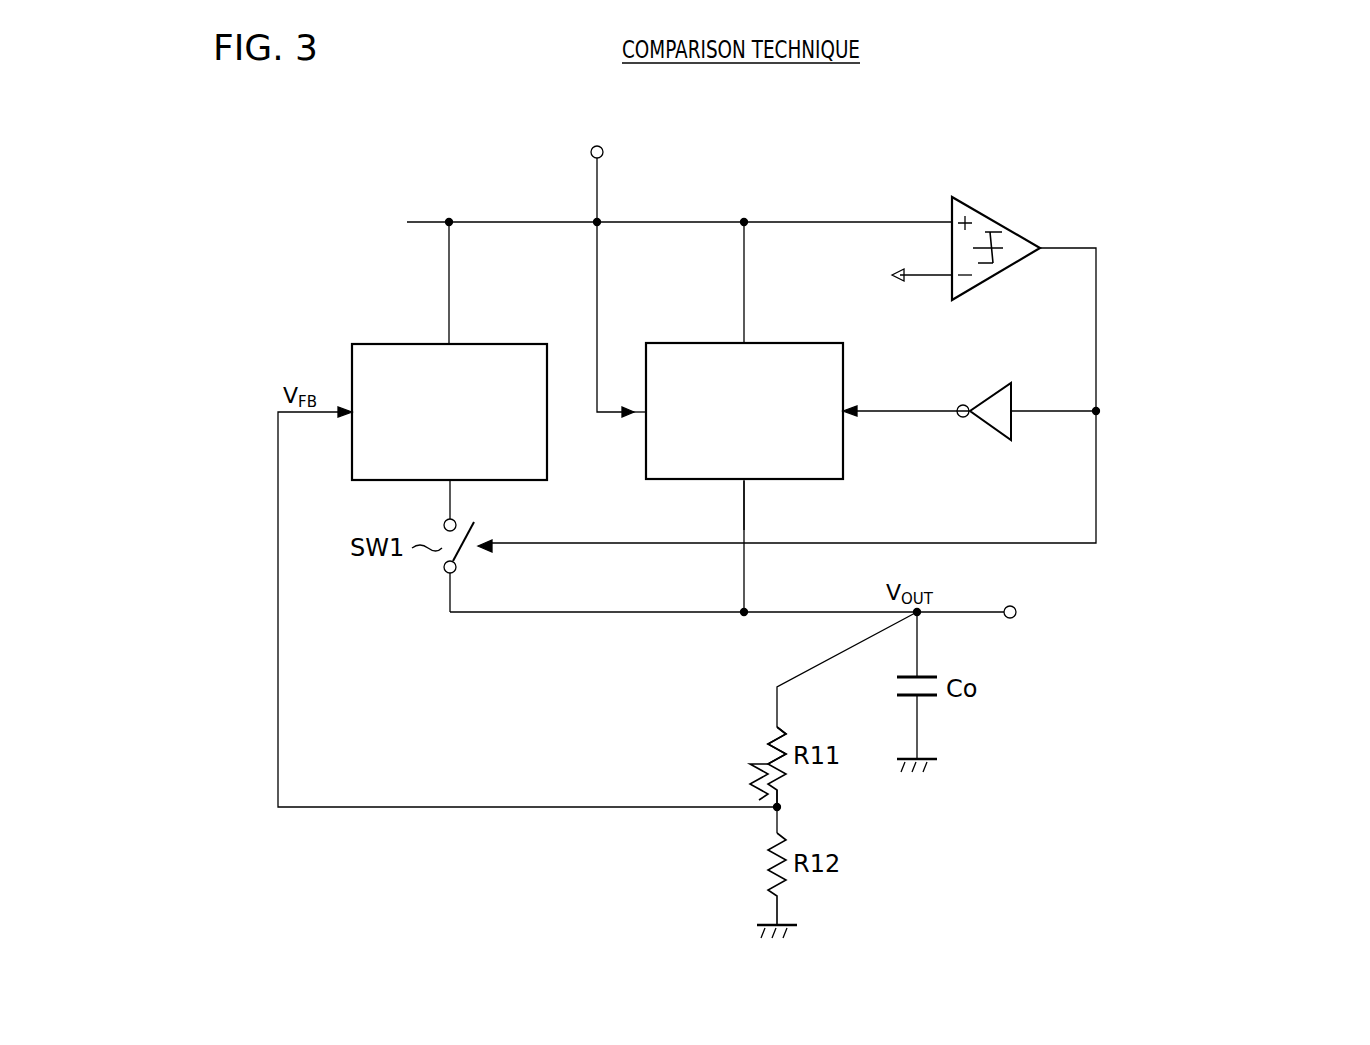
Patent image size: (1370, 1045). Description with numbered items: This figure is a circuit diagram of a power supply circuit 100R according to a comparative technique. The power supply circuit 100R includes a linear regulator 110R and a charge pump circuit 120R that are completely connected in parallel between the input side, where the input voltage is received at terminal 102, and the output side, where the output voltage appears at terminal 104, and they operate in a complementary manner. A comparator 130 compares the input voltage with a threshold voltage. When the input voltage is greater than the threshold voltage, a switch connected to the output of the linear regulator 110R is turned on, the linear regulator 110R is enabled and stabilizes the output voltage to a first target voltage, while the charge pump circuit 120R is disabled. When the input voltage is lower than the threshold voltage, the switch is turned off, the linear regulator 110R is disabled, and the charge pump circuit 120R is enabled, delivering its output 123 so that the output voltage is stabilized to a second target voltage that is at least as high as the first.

The power supply circuit 100R is at (1285, 160).
The input terminal (VCC) 102 is at (603, 152).
The output terminal (VOUT) 104 is at (1016, 612).
The linear regulator 110R is at (497, 343).
The charge pump circuit 120R is at (793, 343).
The charge pump output 123 is at (746, 482).
The comparator 130 is at (996, 218).